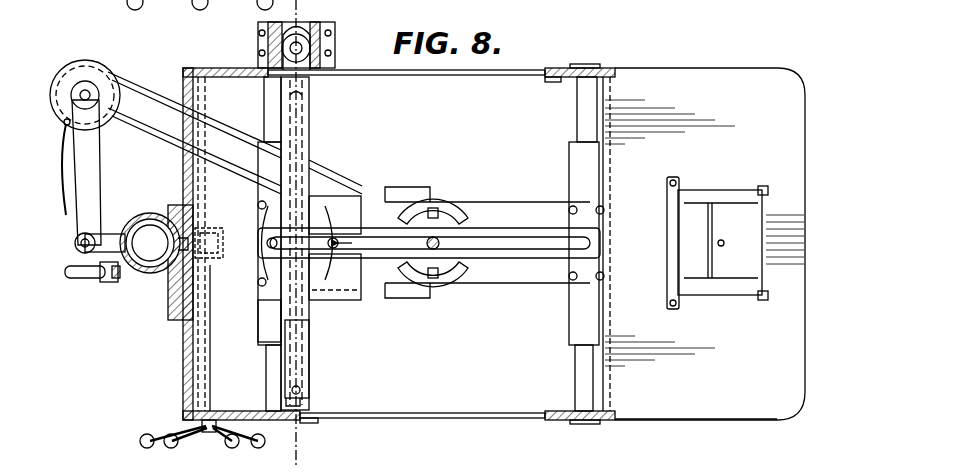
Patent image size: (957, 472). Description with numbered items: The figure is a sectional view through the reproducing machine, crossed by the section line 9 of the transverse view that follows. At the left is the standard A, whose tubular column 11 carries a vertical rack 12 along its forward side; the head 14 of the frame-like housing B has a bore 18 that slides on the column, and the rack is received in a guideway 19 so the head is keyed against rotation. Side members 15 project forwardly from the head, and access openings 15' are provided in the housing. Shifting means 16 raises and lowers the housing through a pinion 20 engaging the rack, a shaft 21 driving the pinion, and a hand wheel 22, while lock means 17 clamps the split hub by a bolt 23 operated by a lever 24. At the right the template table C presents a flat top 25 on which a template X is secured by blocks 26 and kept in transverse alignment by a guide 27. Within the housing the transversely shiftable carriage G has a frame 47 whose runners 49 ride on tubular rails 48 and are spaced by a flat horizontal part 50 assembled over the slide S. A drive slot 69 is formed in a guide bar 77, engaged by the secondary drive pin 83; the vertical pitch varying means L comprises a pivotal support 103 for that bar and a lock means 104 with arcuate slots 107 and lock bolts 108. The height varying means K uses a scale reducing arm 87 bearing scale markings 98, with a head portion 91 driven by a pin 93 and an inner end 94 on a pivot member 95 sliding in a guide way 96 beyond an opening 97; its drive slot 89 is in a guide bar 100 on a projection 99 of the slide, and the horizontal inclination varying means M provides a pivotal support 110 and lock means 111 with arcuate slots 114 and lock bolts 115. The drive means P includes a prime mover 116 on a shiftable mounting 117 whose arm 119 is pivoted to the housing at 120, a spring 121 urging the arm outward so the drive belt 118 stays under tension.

The section line 9— 9 is at (299, 8).
The frame-like housing B is at (540, 72).
The template table C is at (765, 68).
The drive means P is at (68, 60).
The standard A is at (154, 292).
The longitudinally shiftable slide S is at (482, 200).
The vertical pitch varying means L is at (500, 268).
The transversely shiftable carriage G is at (540, 285).
The horizontal inclination varying means M is at (312, 330).
The height varying means K is at (310, 364).
The template X is at (705, 190).
The column 11 is at (136, 278).
The rack 12 is at (178, 243).
The head 14 is at (166, 215).
The side members 15 is at (406, 247).
The access openings 15' is at (436, 263).
The shifting means 16 is at (140, 428).
The lock means 17 is at (86, 278).
The bore 18 is at (133, 226).
The guideway 19 is at (186, 236).
The pinion 20 is at (214, 238).
The shaft 21 is at (200, 365).
The hand wheel 22 is at (170, 424).
The bolt 23 is at (108, 282).
The lever 24 is at (66, 270).
The flat top 25 is at (712, 405).
The blocks 26 is at (766, 186).
The guide 27 is at (669, 254).
The frame 47 is at (546, 200).
The rails 48 is at (272, 385).
The runners 49 is at (268, 333).
The flat horizontal part 50 is at (510, 200).
The drive slot 69 is at (532, 240).
The guide bar 77 is at (333, 235).
The secondary drive pin 83 is at (440, 240).
The scale reducing arm 87 is at (310, 355).
The drive slot 89 is at (292, 153).
The head portion 91 is at (310, 382).
The pin 93 is at (302, 398).
The inner end 94 is at (285, 93).
The pivot member 95 is at (282, 46).
The guide way 96 is at (268, 30).
The opening 97 is at (312, 80).
The scale markings 98 is at (305, 112).
The projection 99 is at (330, 188).
The guide bar 100 is at (312, 320).
The pivotal support 103 is at (450, 208).
The lock means 104 is at (432, 207).
The arcuate slots 107 is at (426, 282).
The lock bolts 108 is at (438, 280).
The pivotal support 110 is at (270, 282).
The lock means 111 is at (342, 252).
The arcuate slots 114 is at (258, 205).
The lock bolts 115 is at (250, 222).
The prime mover 116 is at (106, 66).
The shiftable mounting 117 is at (72, 185).
The drive belt 118 is at (150, 100).
The arm 119 is at (100, 152).
The pivot 120 is at (76, 246).
The spring 121 is at (78, 238).